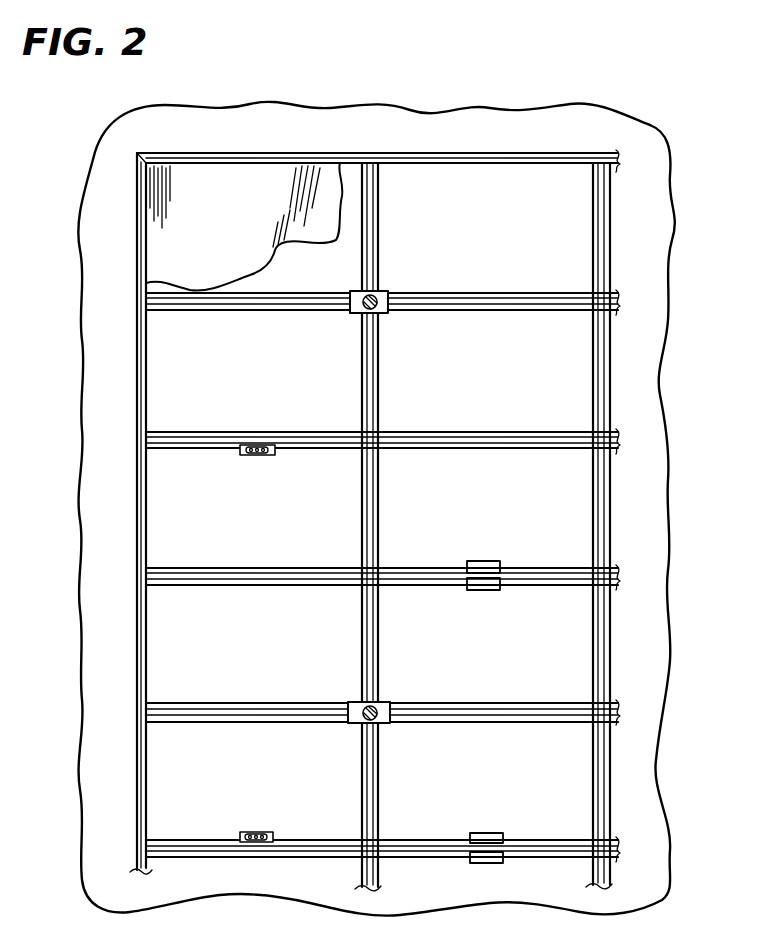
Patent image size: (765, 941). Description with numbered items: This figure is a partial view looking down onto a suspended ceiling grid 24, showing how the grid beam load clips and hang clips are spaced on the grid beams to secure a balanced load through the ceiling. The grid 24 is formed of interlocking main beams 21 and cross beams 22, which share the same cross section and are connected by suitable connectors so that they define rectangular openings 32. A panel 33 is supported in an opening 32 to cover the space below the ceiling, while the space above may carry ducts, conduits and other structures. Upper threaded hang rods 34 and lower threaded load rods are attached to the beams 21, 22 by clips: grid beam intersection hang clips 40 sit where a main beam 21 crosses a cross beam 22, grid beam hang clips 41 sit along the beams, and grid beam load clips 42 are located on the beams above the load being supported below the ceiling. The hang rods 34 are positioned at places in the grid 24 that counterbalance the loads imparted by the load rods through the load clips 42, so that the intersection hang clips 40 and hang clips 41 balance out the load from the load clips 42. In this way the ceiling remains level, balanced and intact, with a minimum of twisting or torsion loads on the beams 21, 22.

The main beam 21 is at (231, 310).
The cross beam 22 is at (362, 402).
The suspended ceiling grid 24 is at (628, 366).
The rectangular opening 32 is at (503, 389).
The panel 33 is at (188, 214).
The upper threaded hang rod 34 is at (362, 310).
The grid beam intersection hang clip 40 is at (386, 292).
The grid beam hang clip 41 is at (267, 457).
The grid beam load clip 42 is at (483, 563).